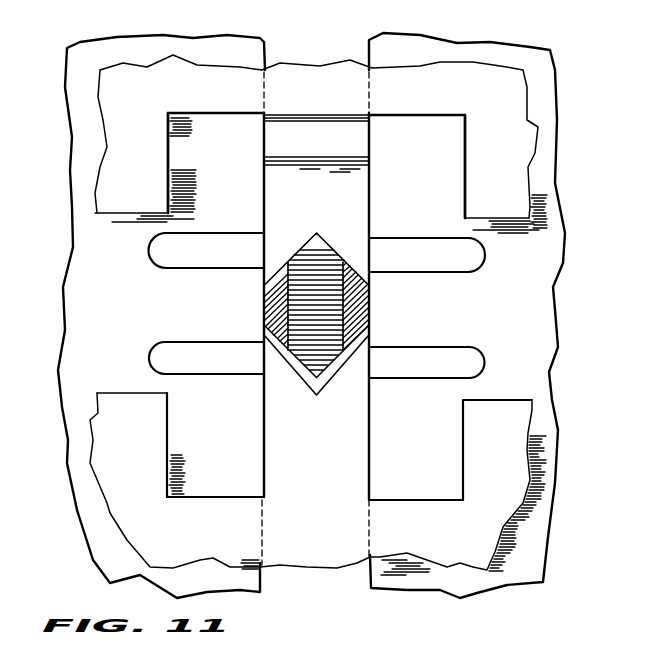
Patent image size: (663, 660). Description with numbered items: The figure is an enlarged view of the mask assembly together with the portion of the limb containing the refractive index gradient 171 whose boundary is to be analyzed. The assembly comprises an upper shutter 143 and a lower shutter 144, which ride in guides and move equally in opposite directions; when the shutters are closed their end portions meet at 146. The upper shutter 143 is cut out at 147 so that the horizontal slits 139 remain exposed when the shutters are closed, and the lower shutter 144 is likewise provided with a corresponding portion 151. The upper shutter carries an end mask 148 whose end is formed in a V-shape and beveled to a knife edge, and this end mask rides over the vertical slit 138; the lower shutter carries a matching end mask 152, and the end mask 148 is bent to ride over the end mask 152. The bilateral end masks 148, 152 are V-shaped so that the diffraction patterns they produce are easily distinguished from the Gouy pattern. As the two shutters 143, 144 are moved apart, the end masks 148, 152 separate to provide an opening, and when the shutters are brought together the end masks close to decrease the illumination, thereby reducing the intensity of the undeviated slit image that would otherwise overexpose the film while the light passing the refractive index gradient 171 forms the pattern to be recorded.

The vertical slit 138 is at (372, 56).
The upper shutter 143 is at (496, 103).
The lower shutter 144 is at (486, 541).
The cut out 147 is at (169, 152).
The end mask 148 is at (331, 203).
The horizontal slits 139 is at (195, 347).
The index of refraction gradient 171 is at (318, 280).
The end mask 152 is at (330, 455).
The meeting point of shutter end portions 146 is at (140, 393).
The portion of lower shutter 151 is at (169, 448).